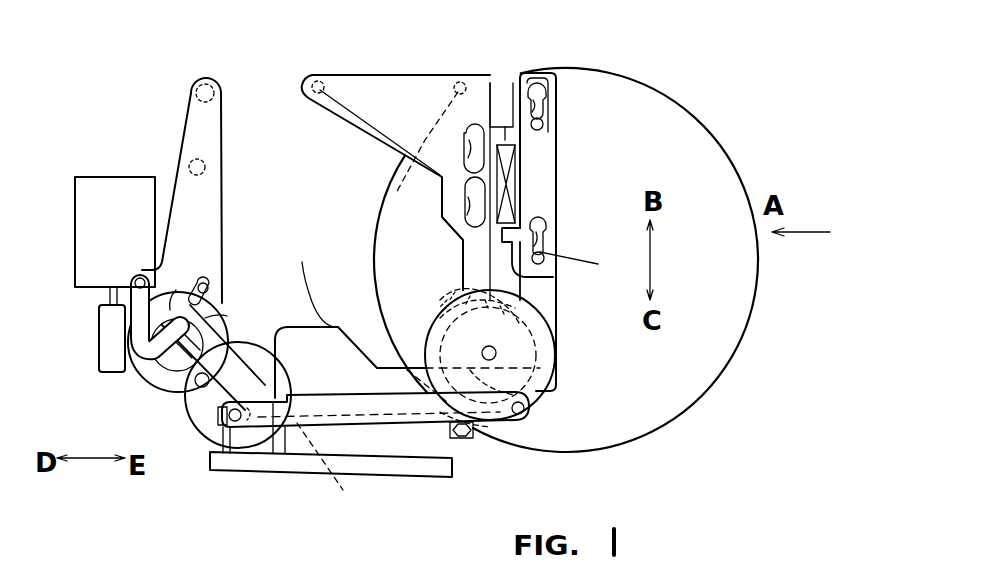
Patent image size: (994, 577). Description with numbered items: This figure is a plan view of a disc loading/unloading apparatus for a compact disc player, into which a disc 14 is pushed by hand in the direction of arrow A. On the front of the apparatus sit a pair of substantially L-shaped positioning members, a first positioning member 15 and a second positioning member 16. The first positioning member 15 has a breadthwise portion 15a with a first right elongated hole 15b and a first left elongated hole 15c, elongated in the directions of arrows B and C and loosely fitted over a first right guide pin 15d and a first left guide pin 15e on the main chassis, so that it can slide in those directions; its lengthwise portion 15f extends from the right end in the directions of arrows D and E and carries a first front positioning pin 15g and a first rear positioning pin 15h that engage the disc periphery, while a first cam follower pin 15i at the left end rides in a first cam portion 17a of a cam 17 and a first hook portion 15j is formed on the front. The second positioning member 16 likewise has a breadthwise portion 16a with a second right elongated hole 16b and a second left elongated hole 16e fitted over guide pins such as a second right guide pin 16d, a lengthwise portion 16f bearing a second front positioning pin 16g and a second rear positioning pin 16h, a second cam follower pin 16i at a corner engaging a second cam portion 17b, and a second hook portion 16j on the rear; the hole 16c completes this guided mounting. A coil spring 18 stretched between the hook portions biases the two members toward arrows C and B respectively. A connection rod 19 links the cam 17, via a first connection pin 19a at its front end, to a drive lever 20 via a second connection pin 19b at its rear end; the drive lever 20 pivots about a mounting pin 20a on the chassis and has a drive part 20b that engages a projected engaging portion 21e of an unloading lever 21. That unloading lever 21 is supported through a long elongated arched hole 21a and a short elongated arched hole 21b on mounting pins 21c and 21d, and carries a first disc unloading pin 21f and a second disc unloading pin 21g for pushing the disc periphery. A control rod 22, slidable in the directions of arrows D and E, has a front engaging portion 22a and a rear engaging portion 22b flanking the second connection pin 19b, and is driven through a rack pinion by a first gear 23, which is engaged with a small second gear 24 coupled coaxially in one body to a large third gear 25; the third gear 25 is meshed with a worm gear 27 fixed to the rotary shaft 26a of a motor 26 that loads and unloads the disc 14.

The disc 14 is at (742, 172).
The first positioning member 15 is at (432, 174).
The breadthwise portion 15a is at (462, 267).
The first right elongated hole 15b is at (465, 138).
The first left elongated hole 15c is at (447, 153).
The first right guide pin 15d is at (487, 82).
The first left guide pin 15e is at (500, 177).
The lengthwise portion 15f is at (365, 133).
The first front positioning pin 15g is at (458, 82).
The first rear positioning pin 15h is at (324, 84).
The first cam follower pin 15i is at (520, 330).
The first hook portion 15j is at (520, 72).
The second positioning member 16 is at (556, 382).
The breadthwise portion 16a is at (548, 208).
The second right elongated hole 16b is at (546, 108).
The slot 16c is at (546, 238).
The second right guide pin 16d is at (543, 126).
The second left elongated hole 16e is at (590, 265).
The lengthwise portion 16f is at (321, 320).
The second front positioning pin 16g is at (480, 427).
The second rear positioning pin 16h is at (385, 445).
The second cam follower pin 16i is at (524, 352).
The second hook portion 16j is at (544, 260).
The cam 17 is at (440, 352).
The first cam portion 17a is at (440, 305).
The second cam portion 17b is at (548, 387).
The coil spring 18 is at (505, 205).
The connection rod 19 is at (393, 427).
The first connection pin 19a is at (530, 412).
The second connection pin 19b is at (212, 422).
The drive lever 20 is at (162, 408).
The mounting pin 20a is at (160, 377).
The drive part 20b is at (160, 372).
The unloading lever 21 is at (223, 215).
The long elongated arched hole 21a is at (128, 313).
The short elongated arched hole 21b is at (210, 296).
The mounting pin 21c is at (137, 275).
The mounting pin 21d is at (206, 284).
The projected engaging portion 21e is at (215, 325).
The first disc unloading pin 21f is at (205, 167).
The second disc unloading pin 21g is at (214, 93).
The control rod 22 is at (252, 478).
The front engaging portion 22a is at (285, 455).
The rear engaging portion 22b is at (228, 455).
The first gear 23 is at (319, 273).
The second gear 24 is at (190, 300).
The third gear 25 is at (172, 280).
The motor 26 is at (75, 211).
The rotary shaft 26a is at (112, 301).
The worm gear 27 is at (97, 327).